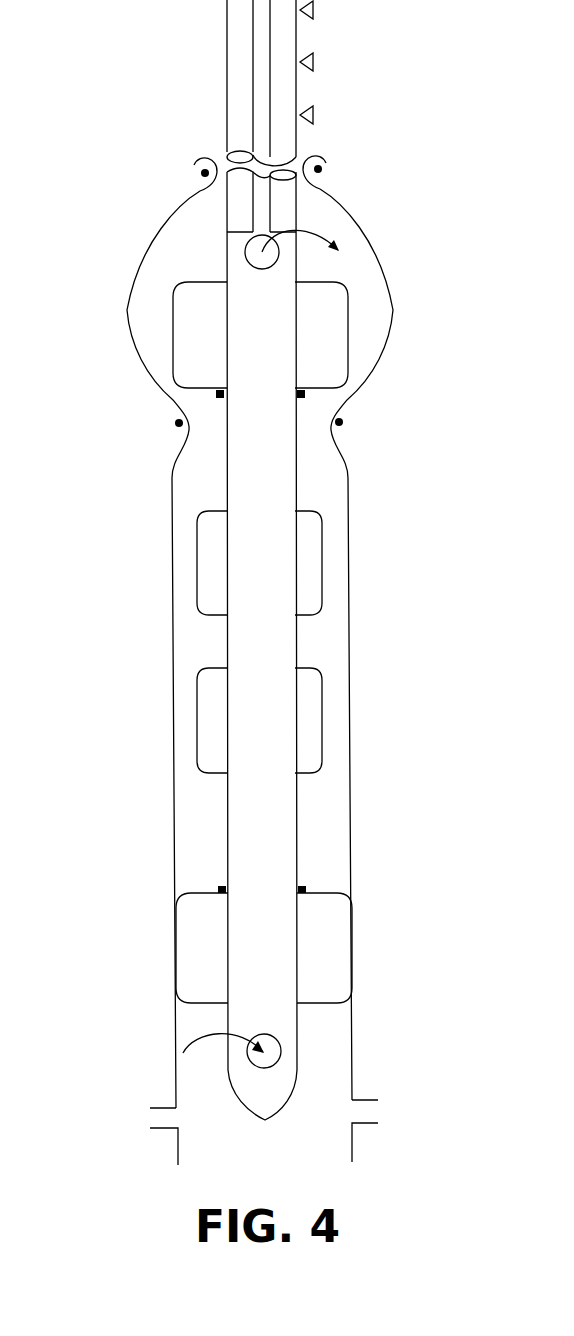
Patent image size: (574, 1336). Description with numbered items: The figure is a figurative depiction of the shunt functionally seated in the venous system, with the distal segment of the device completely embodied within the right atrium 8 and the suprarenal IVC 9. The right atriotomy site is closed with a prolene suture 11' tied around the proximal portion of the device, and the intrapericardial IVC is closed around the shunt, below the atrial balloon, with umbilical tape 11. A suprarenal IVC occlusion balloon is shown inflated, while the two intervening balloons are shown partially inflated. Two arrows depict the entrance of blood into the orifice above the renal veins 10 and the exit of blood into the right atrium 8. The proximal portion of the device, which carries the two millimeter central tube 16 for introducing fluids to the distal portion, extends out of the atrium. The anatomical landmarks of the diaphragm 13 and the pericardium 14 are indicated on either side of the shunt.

The right atrium 8 is at (197, 258).
The suprarenal IVC 9 is at (328, 1078).
The renal vein orifice 10 is at (152, 1118).
The ligature around intrapericardial IVC 11 is at (236, 641).
The ligature around right atrial shunt insertion site 11' is at (237, 176).
The diaphragm 13 is at (358, 463).
The pericardium 14 is at (358, 463).
The central tube 16 is at (270, 97).